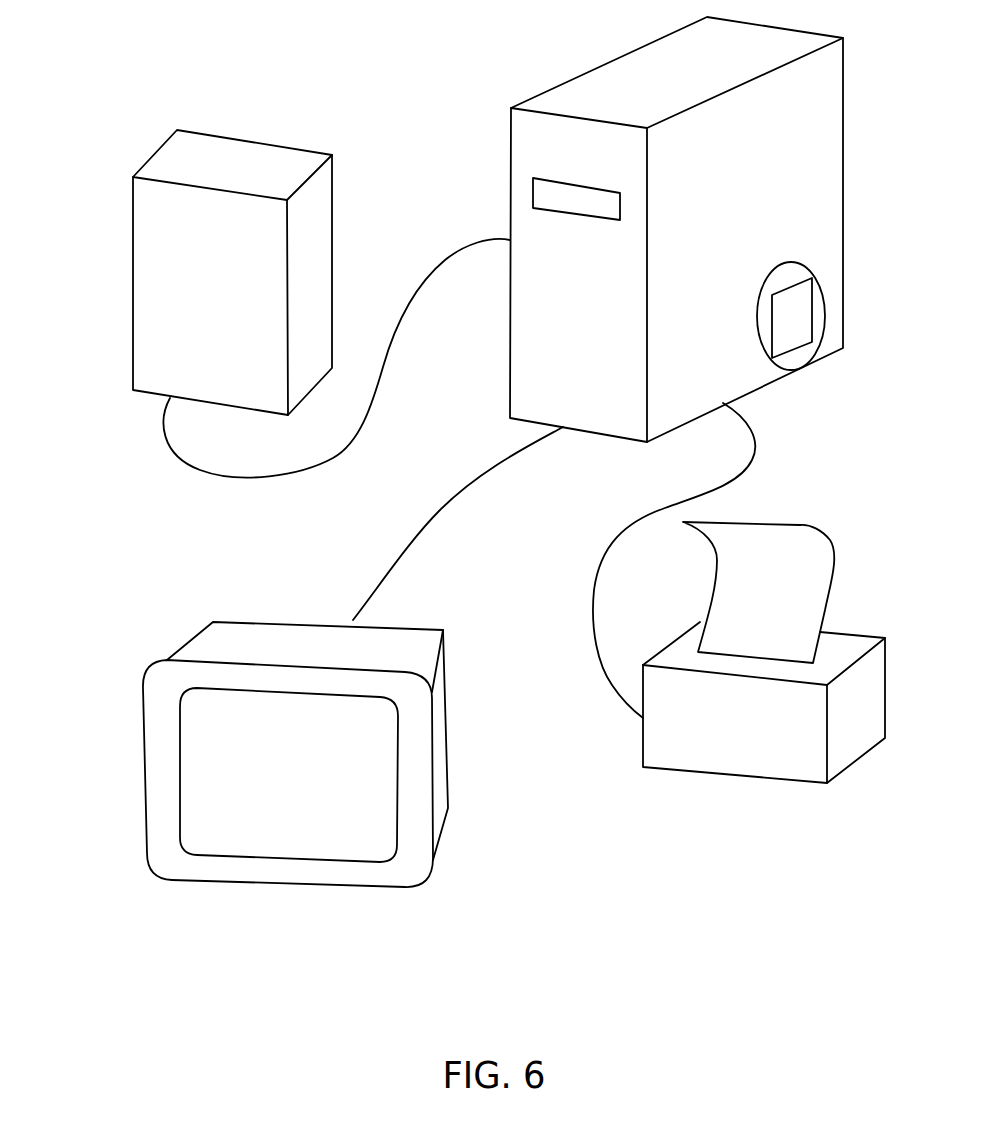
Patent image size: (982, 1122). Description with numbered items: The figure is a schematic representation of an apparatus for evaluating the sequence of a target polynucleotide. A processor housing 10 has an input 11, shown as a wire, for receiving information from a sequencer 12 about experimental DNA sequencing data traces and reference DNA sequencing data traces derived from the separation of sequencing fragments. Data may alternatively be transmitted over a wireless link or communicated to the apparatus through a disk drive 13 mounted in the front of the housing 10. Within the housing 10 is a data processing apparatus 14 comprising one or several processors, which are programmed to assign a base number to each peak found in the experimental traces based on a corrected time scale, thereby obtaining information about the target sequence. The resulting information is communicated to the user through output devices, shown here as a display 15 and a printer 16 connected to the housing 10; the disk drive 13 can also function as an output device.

The processor housing 10 is at (543, 148).
The input 11 is at (190, 463).
The sequencer 12 is at (150, 225).
The disk drive 13 is at (553, 195).
The data processing apparatus 14 is at (792, 325).
The display 15 is at (172, 860).
The printer 16 is at (737, 743).